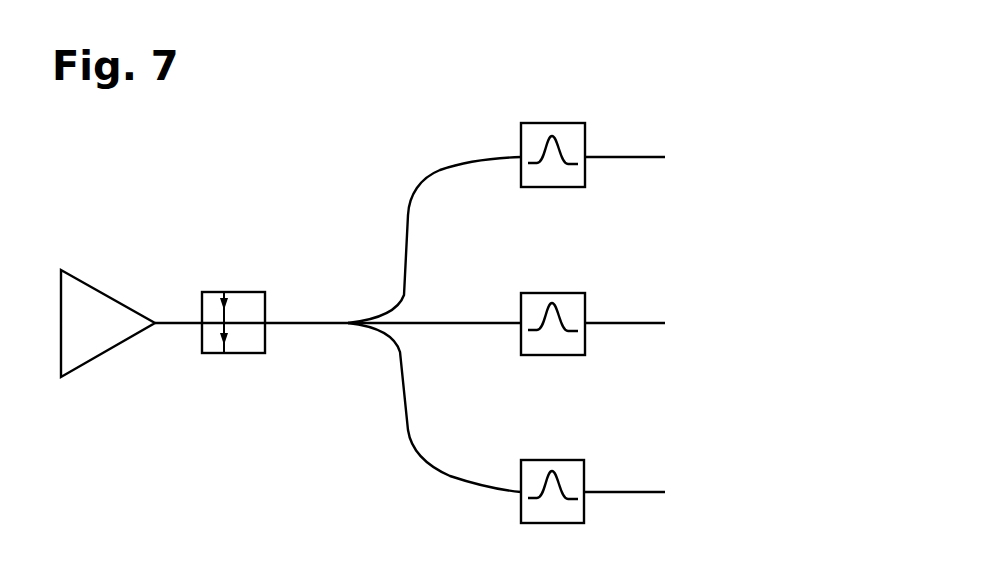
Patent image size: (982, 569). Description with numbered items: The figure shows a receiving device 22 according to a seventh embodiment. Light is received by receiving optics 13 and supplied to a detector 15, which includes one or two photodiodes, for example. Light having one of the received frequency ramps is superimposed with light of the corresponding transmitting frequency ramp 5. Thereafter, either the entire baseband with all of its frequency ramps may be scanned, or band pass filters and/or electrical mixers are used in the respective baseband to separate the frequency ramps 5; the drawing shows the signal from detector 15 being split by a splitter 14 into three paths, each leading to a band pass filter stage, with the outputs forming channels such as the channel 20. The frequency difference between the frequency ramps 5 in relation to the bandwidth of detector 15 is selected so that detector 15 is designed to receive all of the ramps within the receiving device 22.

The receiving optics 13 is at (100, 291).
The frequency ramp 5 is at (201, 322).
The detector 15 is at (233, 291).
The splitter 14 is at (348, 291).
The first filter channel 20 is at (727, 124).
The receiving device 22 is at (727, 257).